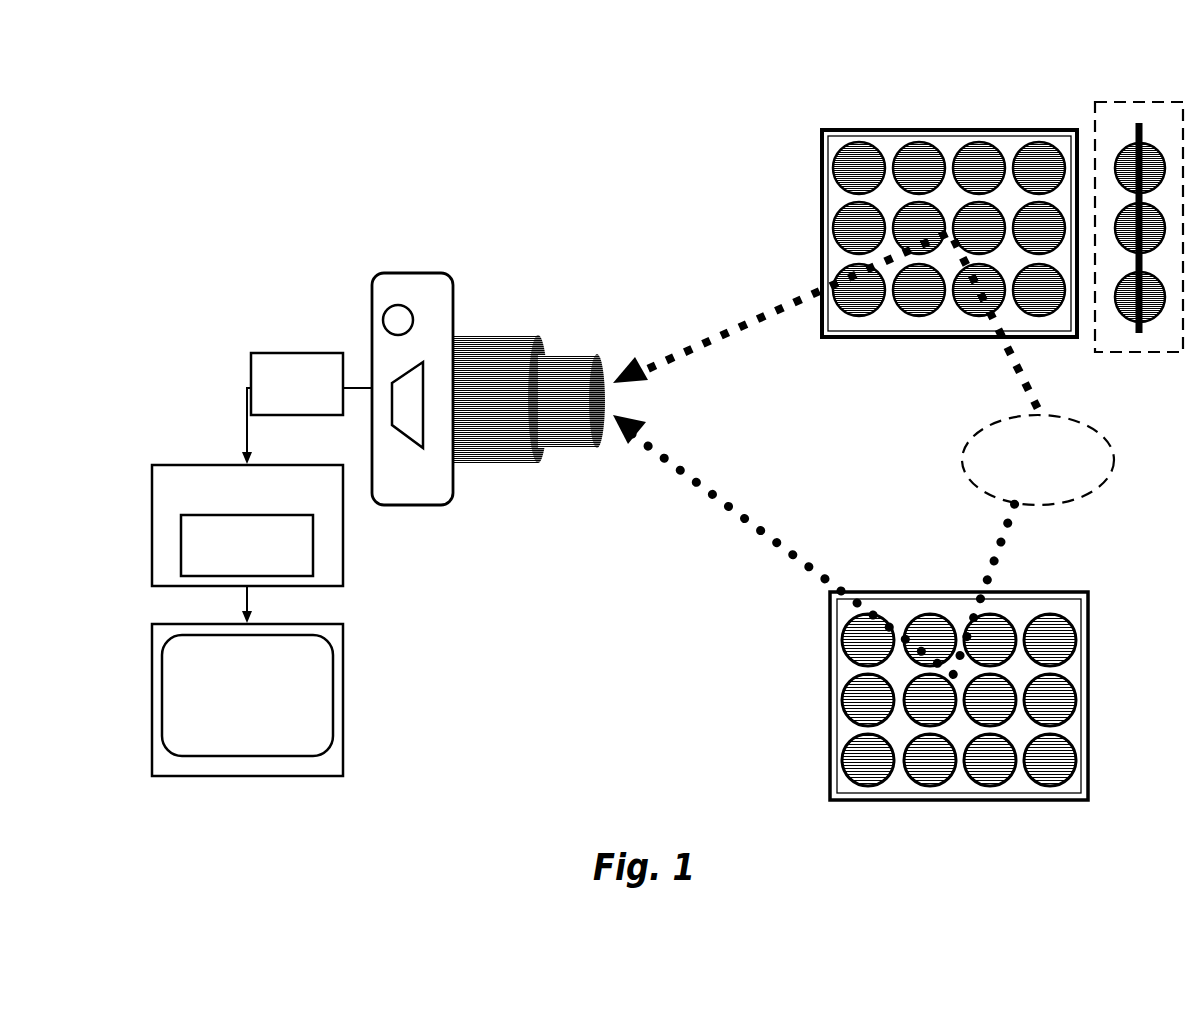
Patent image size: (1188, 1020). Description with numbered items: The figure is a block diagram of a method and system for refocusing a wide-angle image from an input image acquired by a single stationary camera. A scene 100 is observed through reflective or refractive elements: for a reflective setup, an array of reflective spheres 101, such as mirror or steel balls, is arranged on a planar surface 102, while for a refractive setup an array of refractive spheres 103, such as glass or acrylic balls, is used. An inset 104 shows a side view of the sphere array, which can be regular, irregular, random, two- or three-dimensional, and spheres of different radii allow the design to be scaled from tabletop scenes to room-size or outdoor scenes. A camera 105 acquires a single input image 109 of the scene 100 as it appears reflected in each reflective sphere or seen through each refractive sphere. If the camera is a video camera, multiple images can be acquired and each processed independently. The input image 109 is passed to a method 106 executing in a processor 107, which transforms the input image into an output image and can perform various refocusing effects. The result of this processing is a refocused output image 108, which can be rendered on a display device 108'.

The scene 100 is at (1094, 428).
The reflective spheres 101 is at (914, 145).
The planar surface 102 is at (916, 200).
The refractive spheres 103 is at (974, 618).
The inset 104 is at (1146, 102).
The camera 105 is at (414, 273).
The method 106 is at (313, 543).
The processor 107 is at (222, 465).
The refocused output image 108 is at (308, 695).
The display device 108' is at (319, 696).
The input image 109 is at (312, 353).